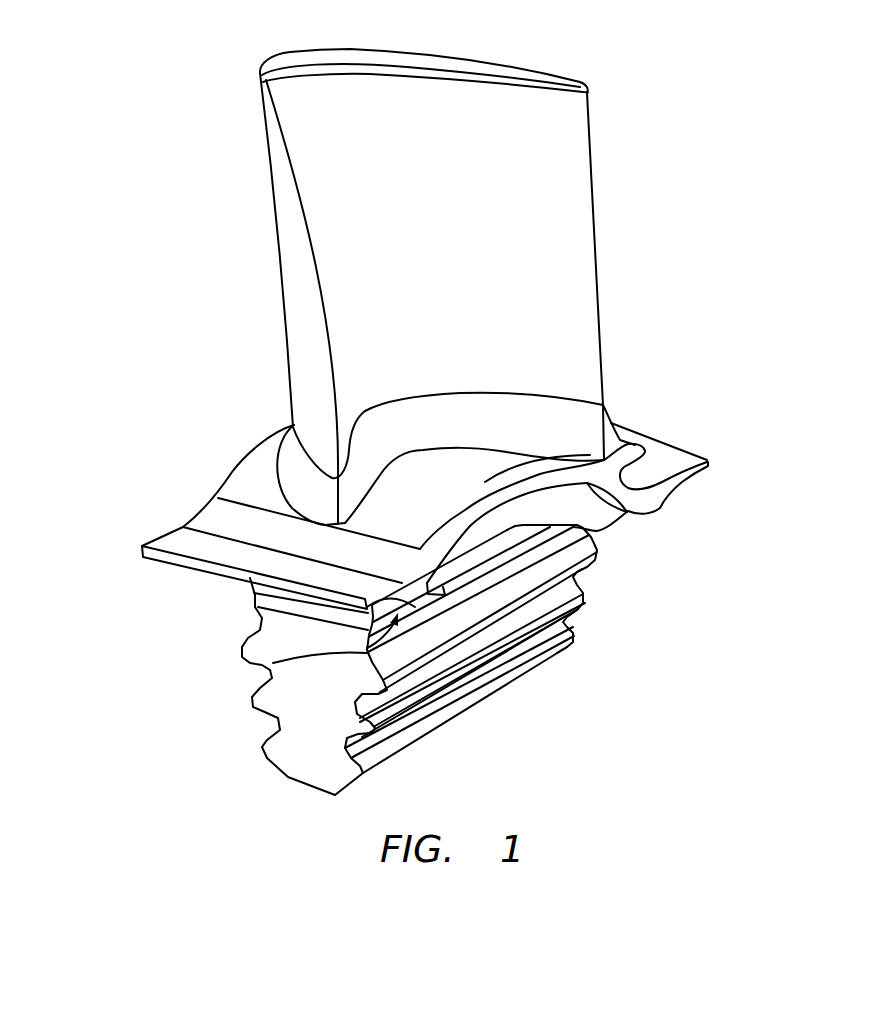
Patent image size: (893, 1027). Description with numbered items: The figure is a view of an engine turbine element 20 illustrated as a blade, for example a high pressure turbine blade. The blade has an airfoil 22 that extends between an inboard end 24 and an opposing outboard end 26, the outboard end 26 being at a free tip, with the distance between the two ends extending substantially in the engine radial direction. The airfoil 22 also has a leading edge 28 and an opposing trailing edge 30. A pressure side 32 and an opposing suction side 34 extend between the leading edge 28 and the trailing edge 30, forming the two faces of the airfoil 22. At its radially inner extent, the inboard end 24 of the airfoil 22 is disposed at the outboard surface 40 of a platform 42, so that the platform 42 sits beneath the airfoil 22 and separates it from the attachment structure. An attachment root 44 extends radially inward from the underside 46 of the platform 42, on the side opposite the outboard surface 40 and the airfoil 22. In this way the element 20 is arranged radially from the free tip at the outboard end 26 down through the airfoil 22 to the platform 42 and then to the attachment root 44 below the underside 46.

The engine turbine element 20 is at (396, 405).
The airfoil 22 is at (323, 272).
The inboard end 24 is at (533, 420).
The outboard end 26 is at (492, 57).
The leading edge 28 is at (327, 350).
The trailing edge 30 is at (597, 228).
The pressure side 32 is at (533, 162).
The suction side 34 is at (276, 204).
The outboard surface 40 is at (608, 440).
The platform 42 is at (641, 478).
The attachment root 44 is at (587, 623).
The underside 46 is at (273, 663).